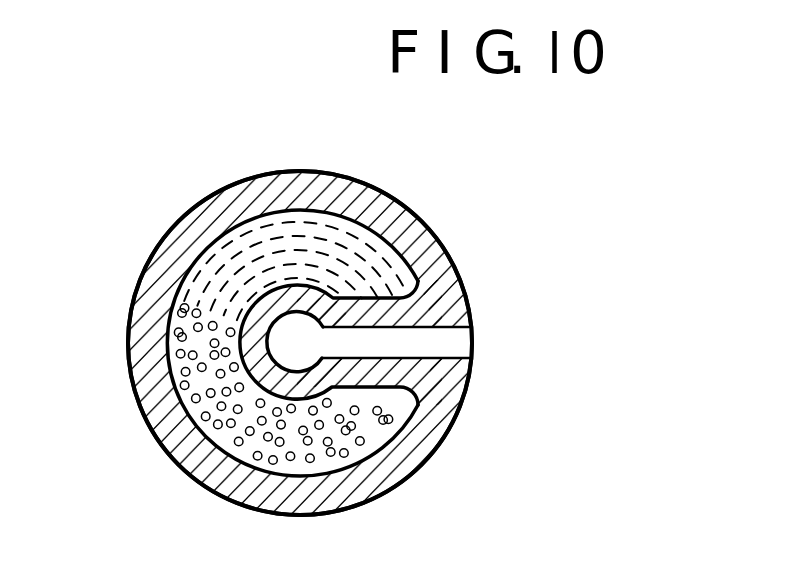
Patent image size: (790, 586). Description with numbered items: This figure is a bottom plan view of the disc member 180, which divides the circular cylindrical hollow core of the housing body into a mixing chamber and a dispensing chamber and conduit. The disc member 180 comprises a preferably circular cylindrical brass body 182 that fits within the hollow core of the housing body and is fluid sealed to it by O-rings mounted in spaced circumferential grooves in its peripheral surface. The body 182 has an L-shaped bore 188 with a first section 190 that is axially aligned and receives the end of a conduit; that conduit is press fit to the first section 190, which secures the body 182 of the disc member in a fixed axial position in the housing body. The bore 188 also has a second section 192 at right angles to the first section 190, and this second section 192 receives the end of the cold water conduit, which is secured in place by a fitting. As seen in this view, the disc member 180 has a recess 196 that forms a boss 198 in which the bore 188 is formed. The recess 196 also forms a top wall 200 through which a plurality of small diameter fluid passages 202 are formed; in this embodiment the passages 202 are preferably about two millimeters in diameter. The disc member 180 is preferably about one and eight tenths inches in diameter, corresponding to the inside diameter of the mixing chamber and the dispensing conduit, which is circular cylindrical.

The disc member 180 is at (494, 289).
The body 182 is at (437, 246).
The L-shaped bore 188 is at (455, 343).
The first section 190 is at (302, 322).
The second section 192 is at (380, 340).
The recess 196 is at (269, 460).
The boss 198 is at (250, 377).
The top wall 200 is at (168, 393).
The fluid passages 202 is at (184, 333).